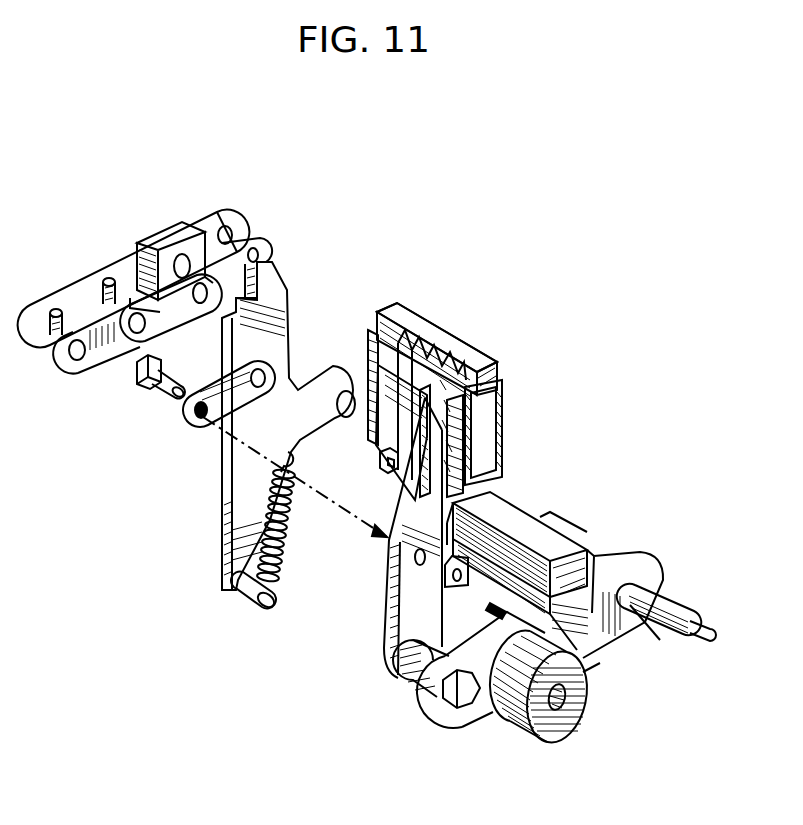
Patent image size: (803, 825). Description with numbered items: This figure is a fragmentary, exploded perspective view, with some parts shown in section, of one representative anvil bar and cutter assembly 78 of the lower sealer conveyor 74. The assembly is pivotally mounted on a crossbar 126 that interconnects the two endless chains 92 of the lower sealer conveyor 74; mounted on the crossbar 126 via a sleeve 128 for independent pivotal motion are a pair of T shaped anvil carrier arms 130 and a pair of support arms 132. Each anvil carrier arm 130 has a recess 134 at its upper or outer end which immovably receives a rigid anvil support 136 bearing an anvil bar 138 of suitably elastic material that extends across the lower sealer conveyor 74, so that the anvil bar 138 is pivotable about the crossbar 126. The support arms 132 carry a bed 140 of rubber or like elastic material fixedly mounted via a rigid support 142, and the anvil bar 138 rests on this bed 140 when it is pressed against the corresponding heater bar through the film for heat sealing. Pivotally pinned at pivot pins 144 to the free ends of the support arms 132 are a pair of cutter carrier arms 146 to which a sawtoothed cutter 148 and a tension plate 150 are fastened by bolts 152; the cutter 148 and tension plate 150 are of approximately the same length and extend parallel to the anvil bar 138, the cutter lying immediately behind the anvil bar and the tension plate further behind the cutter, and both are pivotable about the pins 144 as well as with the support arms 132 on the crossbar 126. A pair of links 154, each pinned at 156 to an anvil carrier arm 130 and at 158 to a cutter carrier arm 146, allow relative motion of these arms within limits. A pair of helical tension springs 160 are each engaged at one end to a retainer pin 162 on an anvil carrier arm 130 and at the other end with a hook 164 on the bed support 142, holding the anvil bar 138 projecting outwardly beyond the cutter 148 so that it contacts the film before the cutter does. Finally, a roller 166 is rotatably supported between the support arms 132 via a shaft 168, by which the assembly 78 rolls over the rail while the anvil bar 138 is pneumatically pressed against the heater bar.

The lower sealer conveyor 74 is at (113, 251).
The endless chain 92 is at (227, 215).
The crossbar 126 is at (703, 620).
The sleeve 128 is at (667, 600).
The anvil carrier arm 130 is at (238, 478).
The support arm 132 is at (647, 623).
The recess 134 is at (223, 310).
The anvil support 136 is at (500, 452).
The anvil bar 138 is at (468, 343).
The bed 140 is at (567, 550).
The rigid support 142 is at (597, 633).
The pivot pin 144 is at (468, 703).
The cutter carrier arm 146 is at (400, 625).
The sawtoothed cutter 148 is at (453, 408).
The tension plate 150 is at (377, 437).
The bolt 152 is at (387, 473).
The link 154 is at (187, 410).
The pin 156 is at (259, 390).
The pin 158 is at (157, 393).
The helical tension spring 160 is at (280, 546).
The retainer pin 162 is at (274, 612).
The hook 164 is at (455, 588).
The roller 166 is at (567, 732).
The shaft 168 is at (565, 709).
The anvil bar and cutter assembly 78 is at (443, 313).